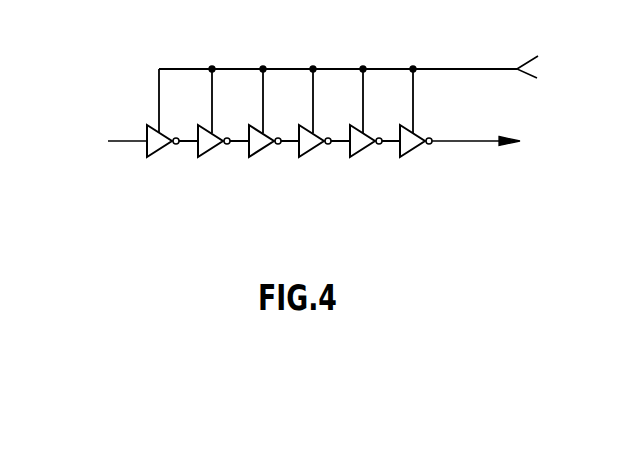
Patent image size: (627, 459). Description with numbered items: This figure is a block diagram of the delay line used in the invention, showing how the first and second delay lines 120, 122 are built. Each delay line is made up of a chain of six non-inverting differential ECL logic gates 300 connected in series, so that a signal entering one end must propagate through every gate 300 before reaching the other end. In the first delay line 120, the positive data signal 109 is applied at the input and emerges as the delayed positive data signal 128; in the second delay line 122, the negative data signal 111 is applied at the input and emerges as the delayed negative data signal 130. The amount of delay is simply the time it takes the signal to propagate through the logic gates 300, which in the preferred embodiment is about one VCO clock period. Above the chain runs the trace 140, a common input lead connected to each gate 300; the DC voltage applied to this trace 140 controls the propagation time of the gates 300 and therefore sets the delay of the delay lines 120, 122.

The positive data signal 109 is at (160, 177).
The negative data signal 111 is at (135, 141).
The first delay line 120 is at (362, 166).
The second delay line 122 is at (460, 233).
The delayed positive data signal 128 is at (499, 160).
The delayed negative data signal 130 is at (479, 141).
The trace 140 is at (528, 67).
The logic gates 300 is at (216, 147).